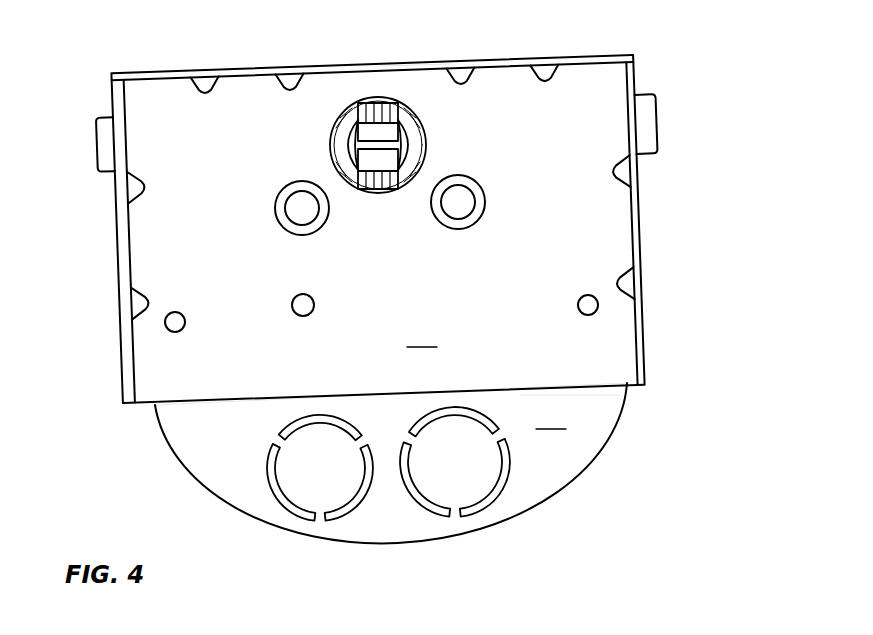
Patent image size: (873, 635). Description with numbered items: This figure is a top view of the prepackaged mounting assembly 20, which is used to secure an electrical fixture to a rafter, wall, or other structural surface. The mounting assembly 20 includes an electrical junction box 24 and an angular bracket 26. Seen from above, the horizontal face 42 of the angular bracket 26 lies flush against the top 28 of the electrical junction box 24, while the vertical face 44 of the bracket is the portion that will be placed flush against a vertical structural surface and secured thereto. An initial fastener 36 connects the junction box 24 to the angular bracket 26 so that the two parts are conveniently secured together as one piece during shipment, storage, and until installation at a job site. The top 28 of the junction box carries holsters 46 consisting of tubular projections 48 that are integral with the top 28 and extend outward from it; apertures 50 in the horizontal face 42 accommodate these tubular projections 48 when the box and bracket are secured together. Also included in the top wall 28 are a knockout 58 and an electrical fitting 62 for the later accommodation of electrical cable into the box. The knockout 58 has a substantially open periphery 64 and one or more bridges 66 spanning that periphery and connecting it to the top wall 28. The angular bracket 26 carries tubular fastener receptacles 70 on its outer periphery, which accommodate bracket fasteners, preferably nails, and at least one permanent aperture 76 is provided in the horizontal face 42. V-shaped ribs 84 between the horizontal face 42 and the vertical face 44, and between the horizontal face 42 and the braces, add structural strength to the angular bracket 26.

The prepackaged mounting assembly 20 is at (720, 176).
The electrical junction box 24 is at (570, 468).
The angular bracket 26 is at (644, 255).
The top 28 is at (570, 413).
The initial fastener 36 is at (308, 295).
The horizontal face 42 is at (422, 335).
The vertical face 44 is at (415, 68).
The holster 46 is at (313, 213).
The tubular projection 48 is at (462, 180).
The aperture 50 is at (278, 212).
The knockout 58 is at (278, 443).
The electrical fitting 62 is at (330, 147).
The open periphery 64 is at (350, 428).
The bridge 66 is at (455, 516).
The tubular fastener receptacle 70 is at (97, 150).
The permanent aperture 76 is at (178, 312).
The V-shaped rib 84 is at (203, 97).